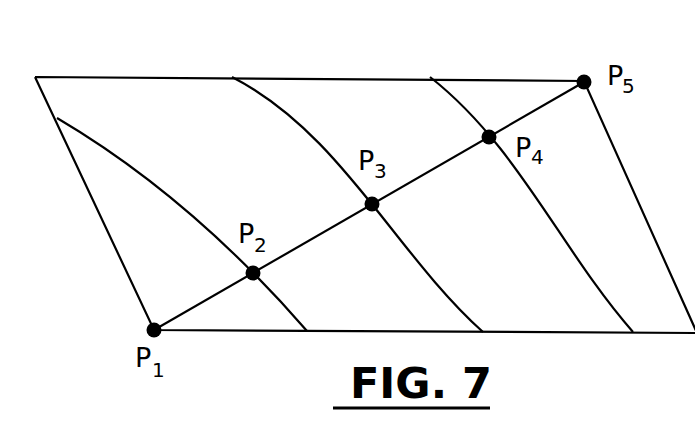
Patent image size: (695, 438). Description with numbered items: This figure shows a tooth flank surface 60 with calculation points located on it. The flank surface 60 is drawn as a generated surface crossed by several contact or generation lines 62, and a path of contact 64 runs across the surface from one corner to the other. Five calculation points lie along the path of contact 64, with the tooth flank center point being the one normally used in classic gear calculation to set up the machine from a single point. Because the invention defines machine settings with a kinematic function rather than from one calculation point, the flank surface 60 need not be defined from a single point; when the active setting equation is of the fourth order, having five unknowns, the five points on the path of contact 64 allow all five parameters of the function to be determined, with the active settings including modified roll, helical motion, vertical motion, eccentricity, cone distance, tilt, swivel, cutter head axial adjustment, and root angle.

The tooth flank surface 60 is at (126, 107).
The contact or generation lines 62 is at (300, 124).
The path of contact 64 is at (457, 162).